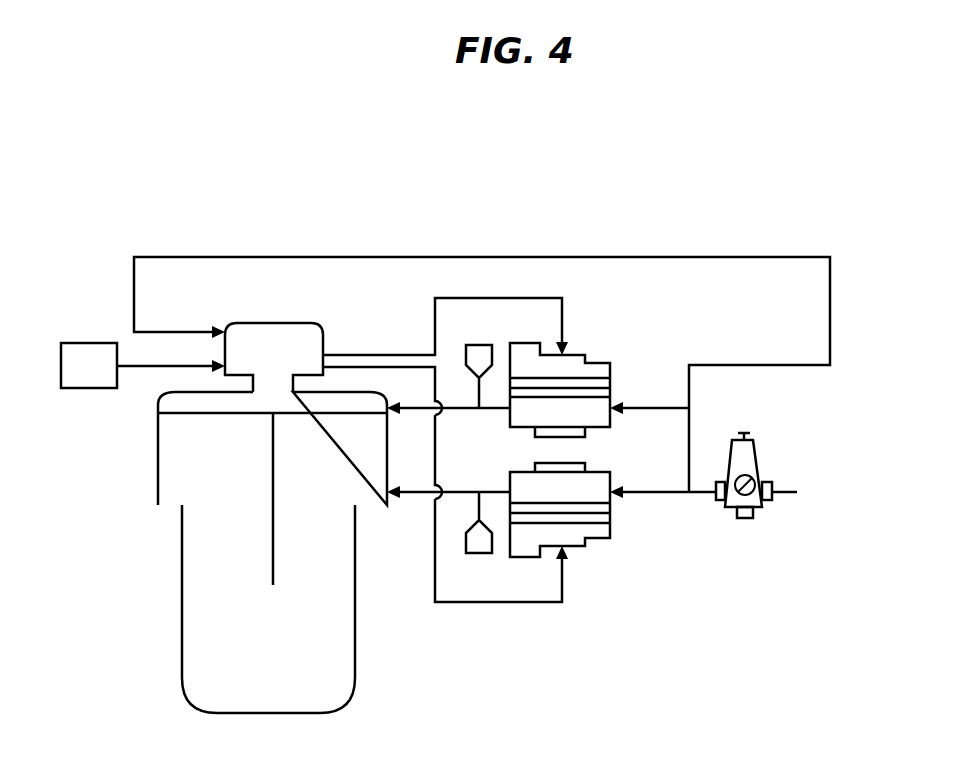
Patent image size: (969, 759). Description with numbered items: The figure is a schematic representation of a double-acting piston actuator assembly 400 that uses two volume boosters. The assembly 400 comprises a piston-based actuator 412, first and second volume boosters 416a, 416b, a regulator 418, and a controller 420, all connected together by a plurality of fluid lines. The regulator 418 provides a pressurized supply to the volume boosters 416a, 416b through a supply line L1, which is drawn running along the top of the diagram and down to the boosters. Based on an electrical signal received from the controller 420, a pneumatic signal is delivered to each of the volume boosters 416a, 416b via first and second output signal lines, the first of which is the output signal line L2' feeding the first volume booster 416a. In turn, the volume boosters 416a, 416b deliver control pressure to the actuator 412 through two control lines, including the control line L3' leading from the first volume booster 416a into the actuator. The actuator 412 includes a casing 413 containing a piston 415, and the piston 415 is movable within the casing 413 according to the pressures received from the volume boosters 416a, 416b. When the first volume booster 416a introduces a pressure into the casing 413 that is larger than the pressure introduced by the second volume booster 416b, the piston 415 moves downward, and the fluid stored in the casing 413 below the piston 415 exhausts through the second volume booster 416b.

The double-acting piston actuator assembly 400 is at (747, 168).
The piston-based actuator 412 is at (170, 610).
The casing 413 is at (180, 537).
The piston 415 is at (197, 417).
The first volume booster 416a is at (590, 365).
The second volume booster 416b is at (577, 533).
The regulator 418 is at (757, 450).
The controller 420 is at (88, 392).
The supply line L1 is at (834, 302).
The first output signal line L2' is at (445, 281).
The first control line L3' is at (416, 311).